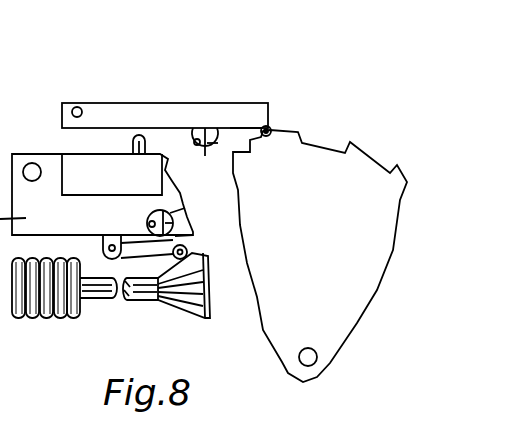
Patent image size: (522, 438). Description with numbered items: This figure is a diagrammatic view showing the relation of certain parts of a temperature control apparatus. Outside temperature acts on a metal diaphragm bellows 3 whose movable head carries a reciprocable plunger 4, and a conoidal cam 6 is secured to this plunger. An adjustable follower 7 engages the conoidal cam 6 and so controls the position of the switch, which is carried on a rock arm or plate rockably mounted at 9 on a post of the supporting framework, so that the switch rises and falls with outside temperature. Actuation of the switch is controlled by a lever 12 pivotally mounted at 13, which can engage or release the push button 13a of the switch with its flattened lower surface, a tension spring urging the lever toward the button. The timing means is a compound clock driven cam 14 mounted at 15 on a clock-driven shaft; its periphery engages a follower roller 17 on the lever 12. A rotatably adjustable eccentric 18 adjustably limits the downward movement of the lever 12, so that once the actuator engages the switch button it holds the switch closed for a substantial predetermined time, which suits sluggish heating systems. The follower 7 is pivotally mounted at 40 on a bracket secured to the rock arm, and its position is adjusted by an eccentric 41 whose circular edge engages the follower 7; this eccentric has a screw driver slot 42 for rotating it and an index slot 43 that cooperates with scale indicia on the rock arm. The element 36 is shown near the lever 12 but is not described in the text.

The metal diaphragm bellows 3 is at (44, 316).
The reciprocable plunger 4 is at (106, 298).
The conoidal cam 6 is at (179, 300).
The adjustable follower 7 is at (187, 248).
The rockable mounting 9 is at (32, 163).
The switch actuating lever 12 is at (200, 110).
The lever pivot 13 is at (78, 107).
The push button 13a is at (132, 141).
The compound clock driven cam 14 is at (364, 153).
The cam mounting 15 is at (310, 348).
The follower roller 17 is at (272, 129).
The rotatably adjustable eccentric 18 is at (191, 142).
The bar edge 36 is at (256, 128).
The follower pivot 40 is at (103, 247).
The eccentric 41 is at (147, 218).
The screw driver slot 42 is at (170, 213).
The index slot 43 is at (185, 228).